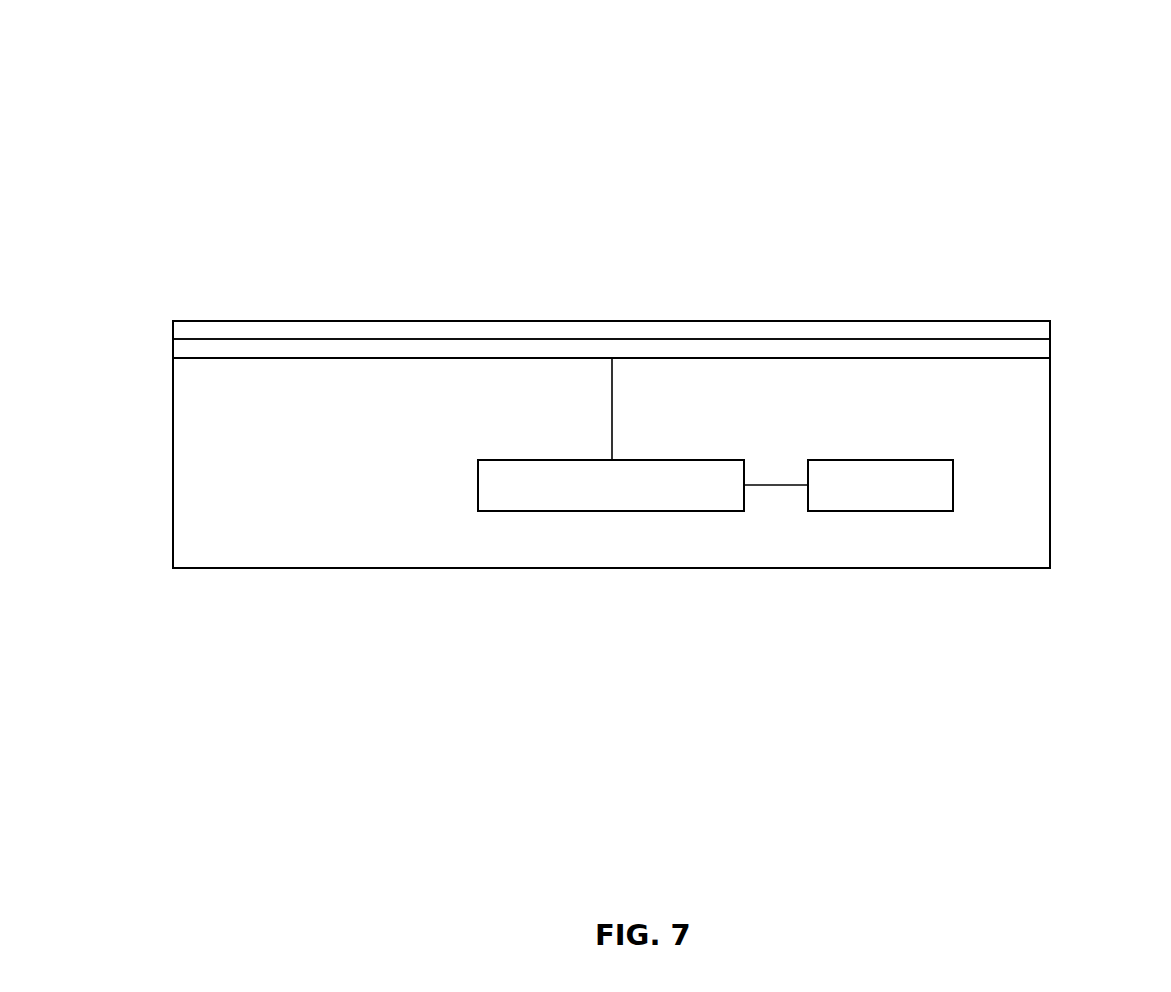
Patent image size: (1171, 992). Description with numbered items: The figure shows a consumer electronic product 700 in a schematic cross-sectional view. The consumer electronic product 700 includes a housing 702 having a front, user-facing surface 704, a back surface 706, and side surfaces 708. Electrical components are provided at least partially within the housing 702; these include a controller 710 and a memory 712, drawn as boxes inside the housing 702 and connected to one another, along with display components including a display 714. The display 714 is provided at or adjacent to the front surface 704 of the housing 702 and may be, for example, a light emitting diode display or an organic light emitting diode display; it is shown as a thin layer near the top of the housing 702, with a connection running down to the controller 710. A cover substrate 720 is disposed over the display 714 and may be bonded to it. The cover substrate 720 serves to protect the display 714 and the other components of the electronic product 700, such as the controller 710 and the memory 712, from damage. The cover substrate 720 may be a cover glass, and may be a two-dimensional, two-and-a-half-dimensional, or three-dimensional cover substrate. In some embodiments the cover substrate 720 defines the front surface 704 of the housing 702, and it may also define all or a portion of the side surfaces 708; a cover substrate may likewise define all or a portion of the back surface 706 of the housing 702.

The consumer electronic product 700 is at (130, 120).
The housing 702 is at (1038, 468).
The front surface 704 is at (743, 320).
The back surface 706 is at (903, 568).
The side surfaces 708 is at (173, 410).
The controller 710 is at (657, 500).
The memory 712 is at (927, 477).
The display 714 is at (398, 348).
The cover substrate 720 is at (535, 332).